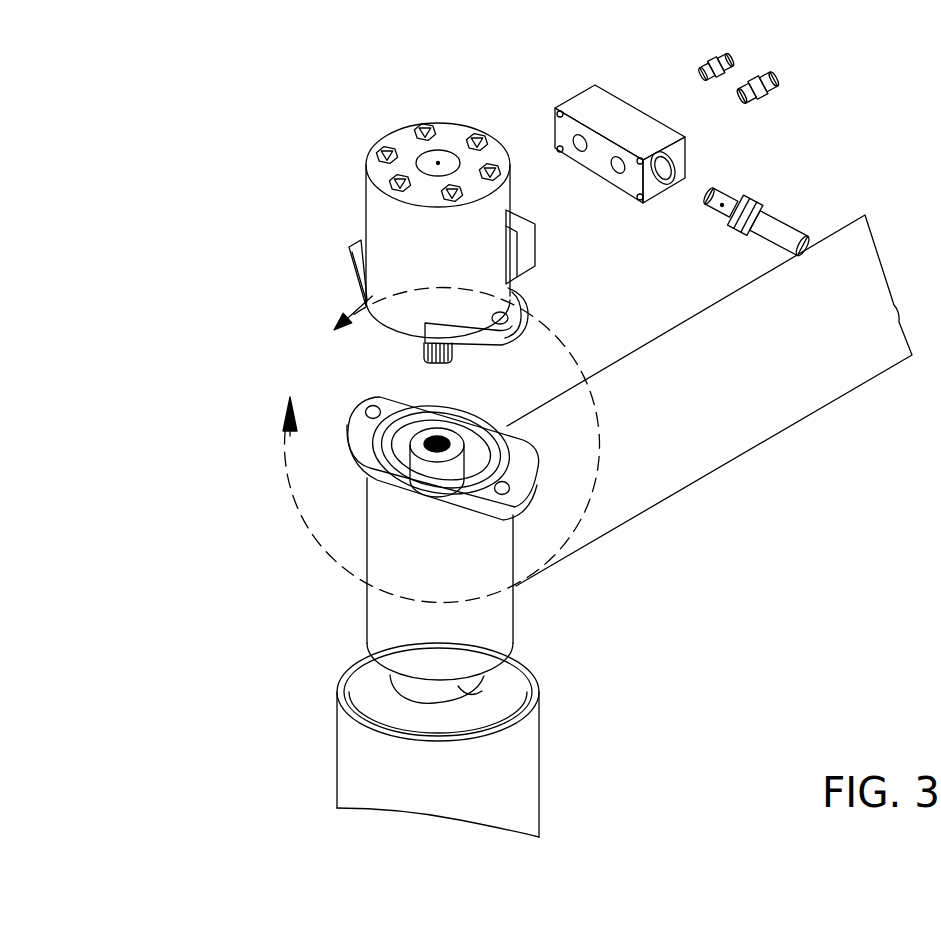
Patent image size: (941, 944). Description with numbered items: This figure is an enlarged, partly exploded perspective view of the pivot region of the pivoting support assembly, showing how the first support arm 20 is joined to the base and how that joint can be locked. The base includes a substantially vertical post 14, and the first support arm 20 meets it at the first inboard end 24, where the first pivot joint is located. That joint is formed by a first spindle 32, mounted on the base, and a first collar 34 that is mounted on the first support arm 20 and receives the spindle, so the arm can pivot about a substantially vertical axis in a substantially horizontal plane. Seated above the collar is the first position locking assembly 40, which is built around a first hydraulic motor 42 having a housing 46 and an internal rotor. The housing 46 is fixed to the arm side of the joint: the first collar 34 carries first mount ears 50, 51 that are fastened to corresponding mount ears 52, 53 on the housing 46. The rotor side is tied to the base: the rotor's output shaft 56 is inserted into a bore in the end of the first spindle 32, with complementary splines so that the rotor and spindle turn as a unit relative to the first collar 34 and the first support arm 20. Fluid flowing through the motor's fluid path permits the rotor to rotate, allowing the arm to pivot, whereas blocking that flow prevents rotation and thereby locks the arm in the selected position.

The post 14 is at (545, 720).
The first support arm 20 is at (795, 453).
The first inboard end 24 is at (541, 547).
The first spindle 32 is at (476, 698).
The first collar 34 is at (365, 617).
The first position locking assembly 40 is at (287, 262).
The first hydraulic motor 42 is at (441, 124).
The housing 46 is at (363, 212).
The first mount ear 50 is at (396, 396).
The first mount ear 51 is at (527, 473).
The mount ear 52 is at (348, 250).
The mount ear 53 is at (548, 335).
The output shaft 56 is at (452, 358).